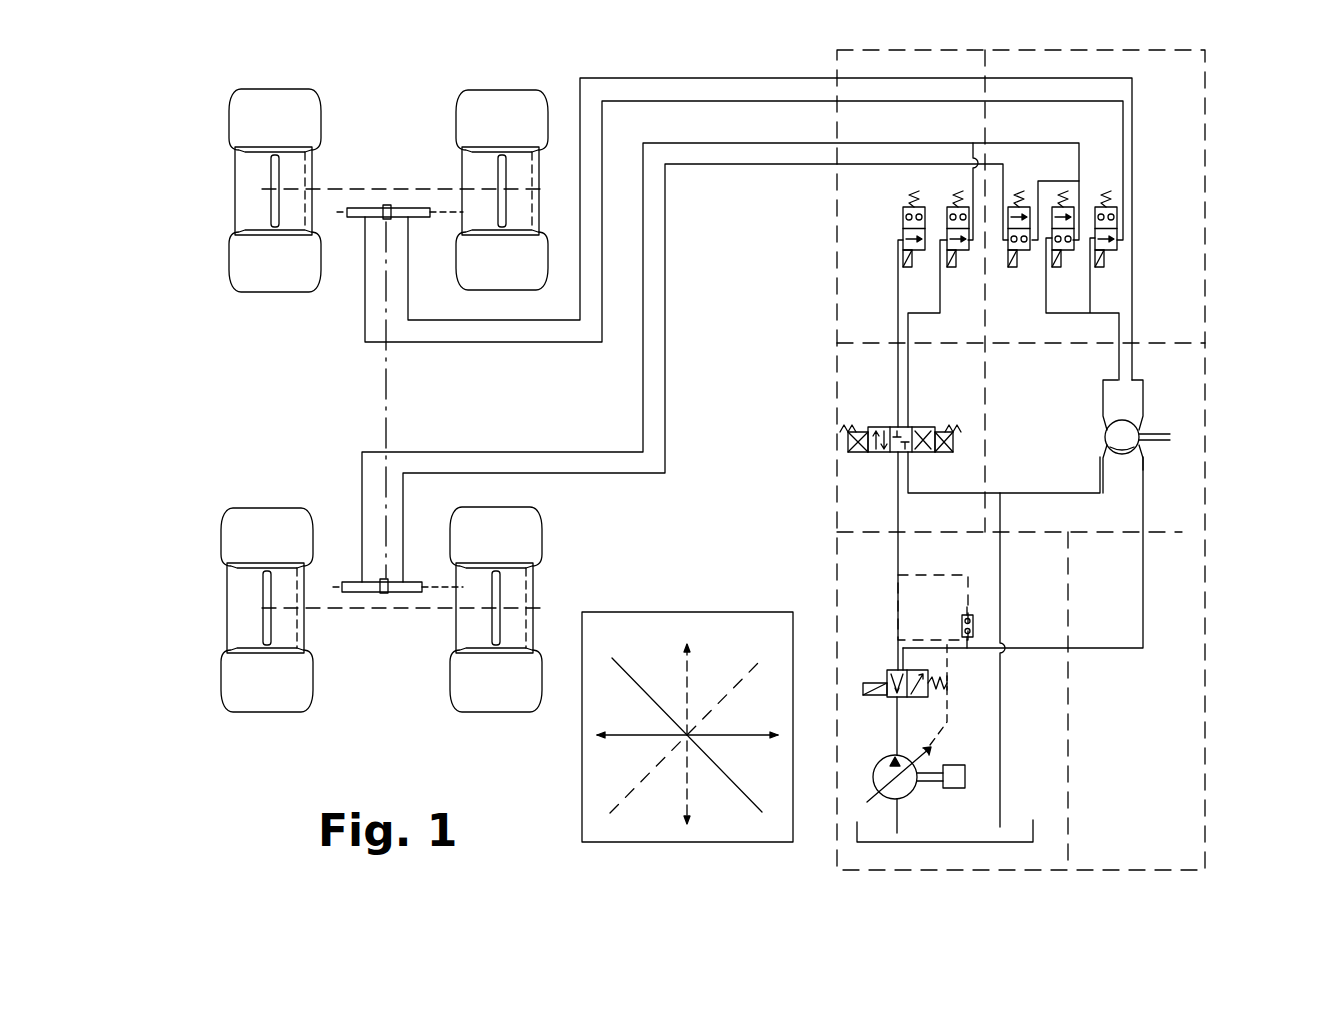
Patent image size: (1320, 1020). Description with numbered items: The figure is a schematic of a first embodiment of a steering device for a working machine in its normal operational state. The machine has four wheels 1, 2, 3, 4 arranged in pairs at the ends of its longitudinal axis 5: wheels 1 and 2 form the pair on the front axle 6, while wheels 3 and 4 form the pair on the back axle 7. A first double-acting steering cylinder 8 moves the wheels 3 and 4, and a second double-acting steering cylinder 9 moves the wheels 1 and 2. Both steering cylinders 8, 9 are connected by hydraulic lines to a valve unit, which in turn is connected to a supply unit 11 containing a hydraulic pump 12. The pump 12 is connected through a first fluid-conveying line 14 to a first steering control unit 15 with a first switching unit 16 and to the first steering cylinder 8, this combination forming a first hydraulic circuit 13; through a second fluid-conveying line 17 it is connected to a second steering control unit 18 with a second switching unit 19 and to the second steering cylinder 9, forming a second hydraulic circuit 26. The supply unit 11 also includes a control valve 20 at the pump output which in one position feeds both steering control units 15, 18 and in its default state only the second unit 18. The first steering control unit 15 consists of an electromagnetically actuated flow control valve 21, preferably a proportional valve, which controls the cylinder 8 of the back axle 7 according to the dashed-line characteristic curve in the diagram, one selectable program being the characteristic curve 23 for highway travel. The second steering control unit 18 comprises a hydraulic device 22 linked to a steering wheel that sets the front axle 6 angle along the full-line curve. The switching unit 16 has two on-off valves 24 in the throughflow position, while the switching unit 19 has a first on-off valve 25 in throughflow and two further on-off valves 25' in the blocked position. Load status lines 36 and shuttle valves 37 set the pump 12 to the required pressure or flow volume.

The wheel 1 is at (234, 212).
The wheel 2 is at (463, 160).
The wheel 3 is at (227, 611).
The wheel 4 is at (457, 637).
The longitudinal axis 5 is at (385, 403).
The front axle 6 is at (345, 188).
The back axle 7 is at (337, 617).
The first double-acting steering cylinder 8 is at (400, 593).
The second double-acting steering cylinder 9 is at (407, 208).
The supply unit 11 is at (837, 585).
The hydraulic pump 12 is at (876, 770).
The first hydraulic circuit 13 is at (855, 835).
The first fluid-conveying line 14 is at (897, 612).
The first steering control unit 15 is at (837, 400).
The first switching unit 16 is at (837, 290).
The second fluid-conveying line 17 is at (1142, 617).
The second steering control unit 18 is at (1202, 480).
The second switching unit 19 is at (1205, 147).
The control valve 20 is at (947, 676).
The flow control valve 21 is at (876, 456).
The hydraulic device 22 is at (1138, 424).
The characteristic curve 23 is at (733, 685).
The on-off valves 24 is at (953, 200).
The first on-off valve 25 is at (1136, 229).
The on-off valves 25' is at (1094, 203).
The second hydraulic circuit 26 is at (1180, 562).
The load status lines 36 is at (935, 647).
The shuttle valves 37 is at (973, 615).